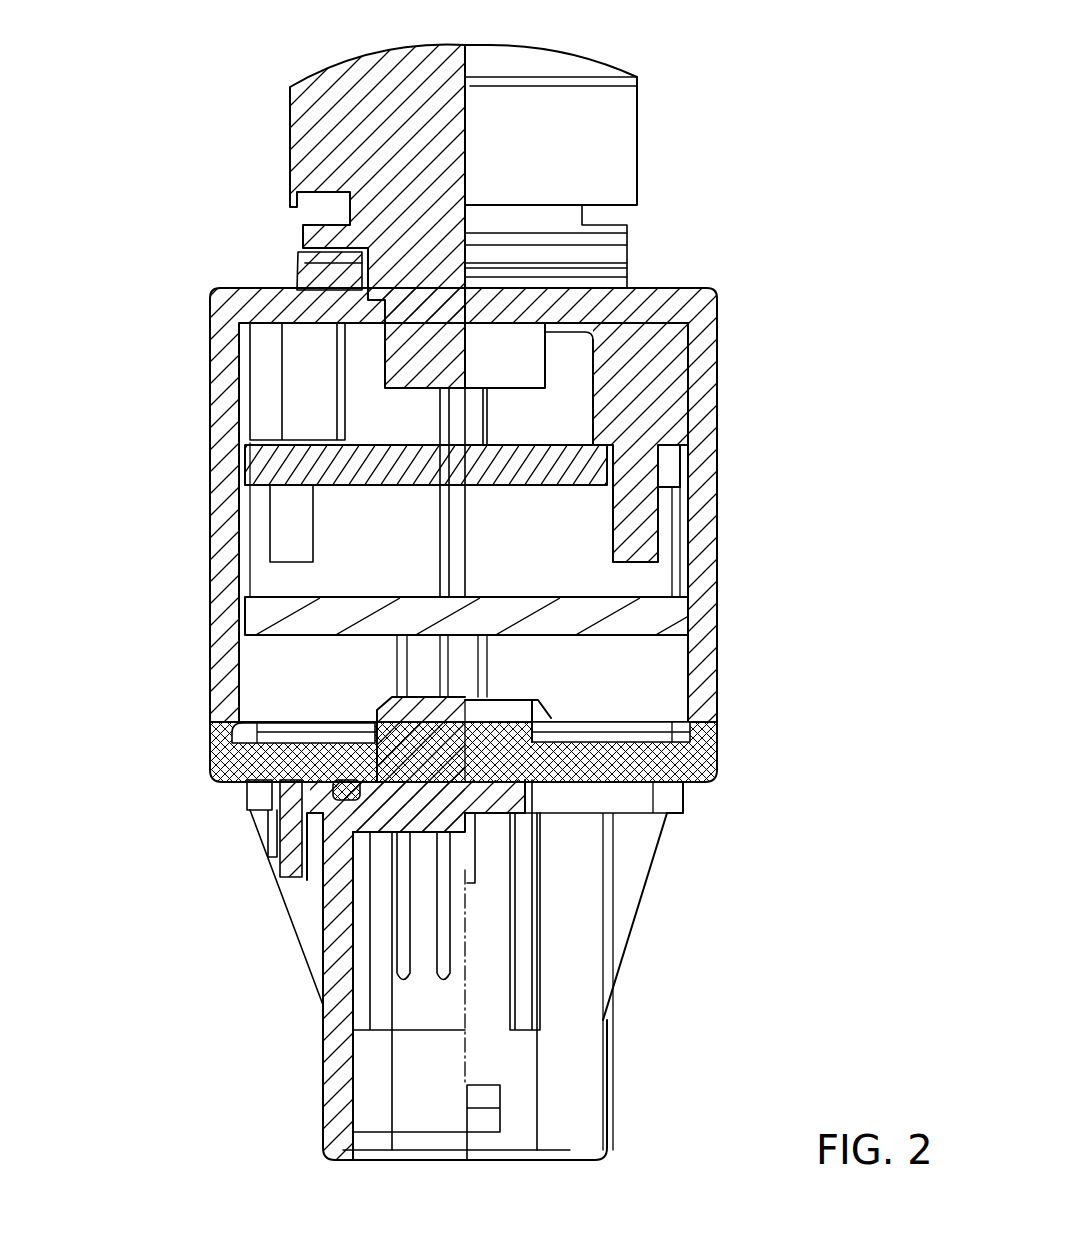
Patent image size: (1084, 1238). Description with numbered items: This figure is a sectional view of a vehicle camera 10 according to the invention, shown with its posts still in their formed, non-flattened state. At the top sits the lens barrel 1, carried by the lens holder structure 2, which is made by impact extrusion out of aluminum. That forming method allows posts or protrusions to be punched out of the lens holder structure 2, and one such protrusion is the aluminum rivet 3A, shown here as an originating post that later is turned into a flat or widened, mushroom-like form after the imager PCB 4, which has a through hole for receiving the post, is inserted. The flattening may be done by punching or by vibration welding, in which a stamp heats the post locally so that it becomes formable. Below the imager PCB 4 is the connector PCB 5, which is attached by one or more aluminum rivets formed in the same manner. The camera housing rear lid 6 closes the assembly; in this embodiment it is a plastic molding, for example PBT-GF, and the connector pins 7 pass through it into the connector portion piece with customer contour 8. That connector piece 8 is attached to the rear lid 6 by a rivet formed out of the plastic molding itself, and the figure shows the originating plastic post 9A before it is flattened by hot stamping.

The vehicle camera 10 is at (182, 82).
The lens barrel 1 is at (577, 127).
The lens holder structure 2 is at (637, 327).
The aluminum rivet 3A is at (637, 533).
The imager PCB 4 is at (603, 447).
The connector PCB 5 is at (627, 622).
The camera housing rear lid 6 is at (700, 755).
The connector pins 7 is at (447, 860).
The connector portion piece with customer contour 8 is at (572, 968).
The plastic post 9A is at (263, 833).